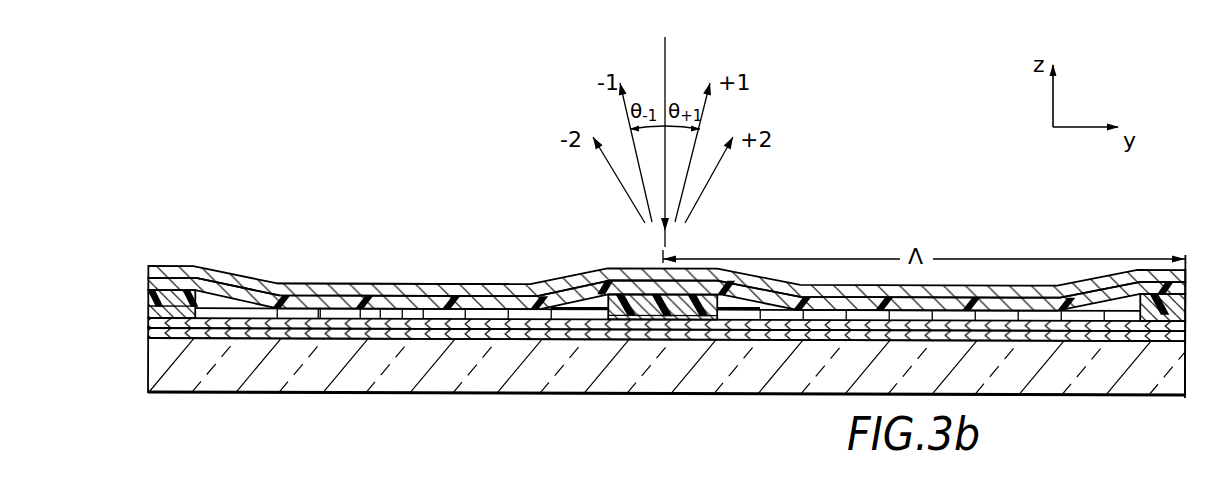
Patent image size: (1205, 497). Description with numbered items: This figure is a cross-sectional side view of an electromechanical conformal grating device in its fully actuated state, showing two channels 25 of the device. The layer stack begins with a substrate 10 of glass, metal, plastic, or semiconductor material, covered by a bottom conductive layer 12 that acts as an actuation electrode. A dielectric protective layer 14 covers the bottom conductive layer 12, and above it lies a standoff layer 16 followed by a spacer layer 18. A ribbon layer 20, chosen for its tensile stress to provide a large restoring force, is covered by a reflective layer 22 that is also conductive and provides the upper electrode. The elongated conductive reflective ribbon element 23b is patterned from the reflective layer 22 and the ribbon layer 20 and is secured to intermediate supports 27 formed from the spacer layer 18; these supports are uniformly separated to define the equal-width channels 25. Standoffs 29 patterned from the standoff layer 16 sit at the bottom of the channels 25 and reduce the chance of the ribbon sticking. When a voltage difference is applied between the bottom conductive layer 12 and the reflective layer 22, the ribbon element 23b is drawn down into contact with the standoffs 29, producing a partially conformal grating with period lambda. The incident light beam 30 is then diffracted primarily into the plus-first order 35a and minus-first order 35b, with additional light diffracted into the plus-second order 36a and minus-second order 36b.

The substrate 10 is at (157, 363).
The bottom conductive layer 12 is at (143, 333).
The dielectric protective layer 14 is at (143, 325).
The standoff layer 16 is at (143, 308).
The spacer layer 18 is at (143, 292).
The ribbon layer 20 is at (143, 282).
The reflective layer 22 is at (143, 268).
The conductive reflective ribbon element 23b is at (352, 283).
The channels 25 is at (565, 308).
The intermediate supports 27 is at (612, 295).
The standoffs 29 is at (300, 308).
The incident light beam 30 is at (663, 82).
The +1st order diffracted beam 35a is at (701, 121).
The −1st order diffracted beam 35b is at (631, 137).
The +2nd order diffracted beam 36a is at (708, 183).
The −2nd order diffracted beam 36b is at (626, 193).